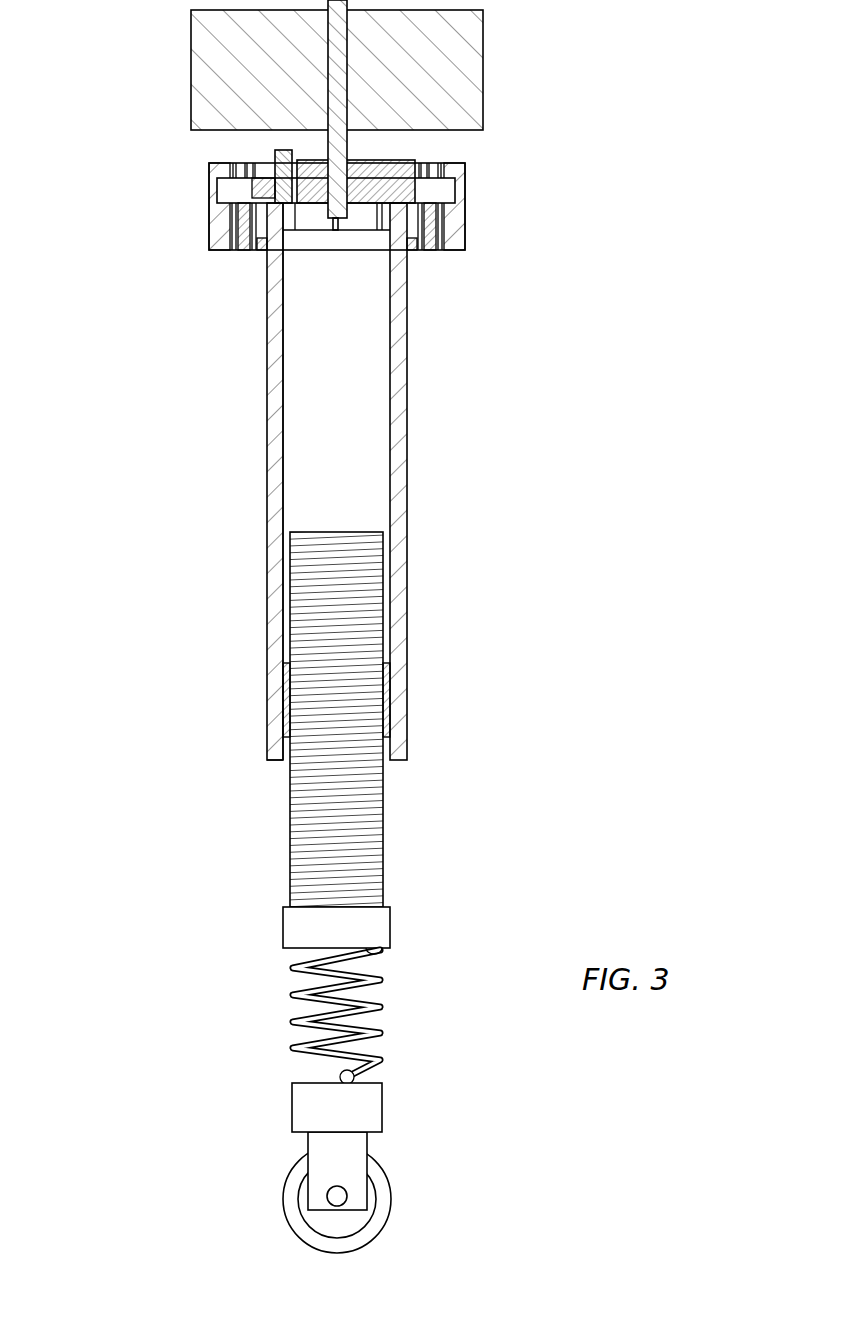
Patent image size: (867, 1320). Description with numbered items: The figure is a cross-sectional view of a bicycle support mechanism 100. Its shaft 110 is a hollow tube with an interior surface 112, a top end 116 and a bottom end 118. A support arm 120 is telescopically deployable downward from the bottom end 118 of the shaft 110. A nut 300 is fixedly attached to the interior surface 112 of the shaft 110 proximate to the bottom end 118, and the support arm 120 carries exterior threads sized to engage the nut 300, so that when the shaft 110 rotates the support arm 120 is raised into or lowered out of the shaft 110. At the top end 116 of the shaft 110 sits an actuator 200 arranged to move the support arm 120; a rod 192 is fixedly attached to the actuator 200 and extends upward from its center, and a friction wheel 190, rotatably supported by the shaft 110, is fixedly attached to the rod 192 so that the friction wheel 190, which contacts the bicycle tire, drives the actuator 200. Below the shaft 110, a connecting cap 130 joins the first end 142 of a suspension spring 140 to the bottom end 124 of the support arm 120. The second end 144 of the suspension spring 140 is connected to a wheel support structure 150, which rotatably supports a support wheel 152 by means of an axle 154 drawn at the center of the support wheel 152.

The support mechanism 100 is at (66, 59).
The shaft 110 is at (407, 388).
The interior surface 112 is at (283, 363).
The top end 116 is at (224, 163).
The bottom end 118 is at (286, 758).
The support arm 120 is at (385, 823).
The bottom end 124 is at (303, 909).
The connecting cap 130 is at (390, 930).
The suspension spring 140 is at (290, 1000).
The first end 142 is at (388, 955).
The second end 144 is at (376, 1068).
The wheel support structure 150 is at (382, 1118).
The support wheel 152 is at (392, 1198).
The roller axle 154 is at (328, 1196).
The friction wheel 190 is at (484, 30).
The rod 192 is at (350, 141).
The actuator 200 is at (150, 222).
The nut 300 is at (390, 690).